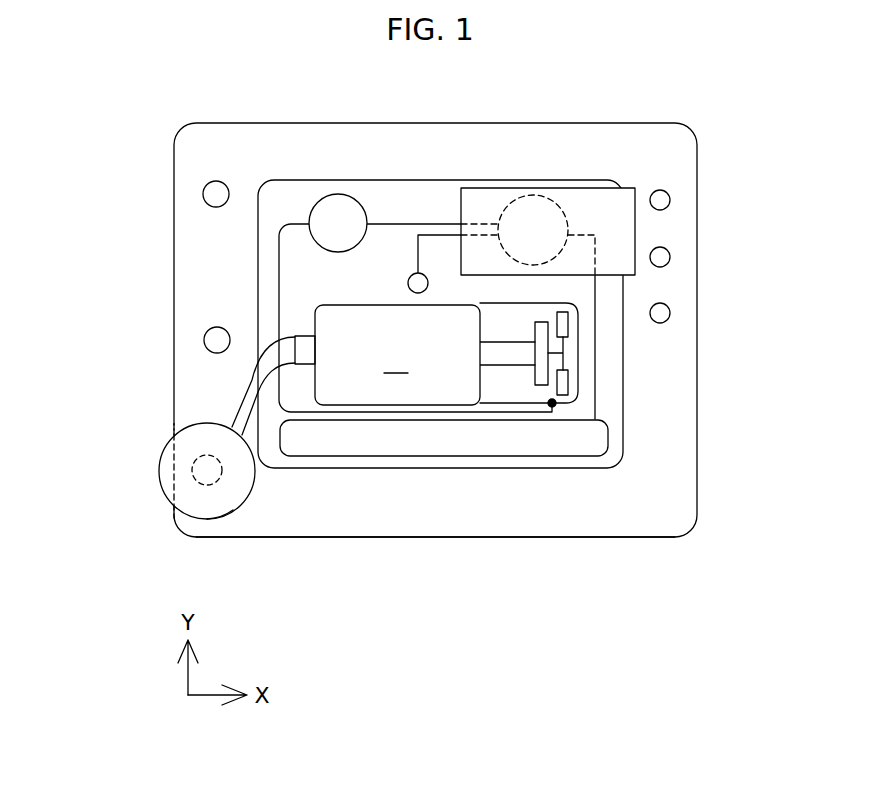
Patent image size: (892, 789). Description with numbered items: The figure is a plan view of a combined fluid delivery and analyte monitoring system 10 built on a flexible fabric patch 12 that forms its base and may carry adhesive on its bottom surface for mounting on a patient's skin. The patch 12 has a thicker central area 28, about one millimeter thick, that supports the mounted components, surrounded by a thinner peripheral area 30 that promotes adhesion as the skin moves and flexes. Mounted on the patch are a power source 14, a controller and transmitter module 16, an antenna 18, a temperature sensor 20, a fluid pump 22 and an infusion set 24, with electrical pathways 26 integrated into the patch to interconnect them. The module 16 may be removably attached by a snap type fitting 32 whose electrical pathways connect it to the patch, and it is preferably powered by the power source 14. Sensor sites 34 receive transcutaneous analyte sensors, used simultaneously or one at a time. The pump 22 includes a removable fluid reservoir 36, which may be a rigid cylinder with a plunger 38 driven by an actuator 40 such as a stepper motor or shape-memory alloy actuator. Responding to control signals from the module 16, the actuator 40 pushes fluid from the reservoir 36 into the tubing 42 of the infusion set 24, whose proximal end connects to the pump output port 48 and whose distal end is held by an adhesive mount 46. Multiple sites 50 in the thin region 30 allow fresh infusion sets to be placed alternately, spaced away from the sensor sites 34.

The combined fluid delivery and analyte monitoring system 10 is at (132, 115).
The flexible fabric patch 12 is at (668, 455).
The power source 14 is at (338, 210).
The controller and transmitter module 16 is at (597, 203).
The antenna 18 is at (580, 433).
The temperature sensor 20 is at (408, 283).
The fluid pump 22 is at (566, 352).
The infusion set 24 is at (233, 510).
The electrical pathways 26 is at (400, 220).
The thicker area 28 is at (545, 468).
The peripheral area 30 is at (465, 537).
The snap type fitting 32 is at (520, 213).
The sensor sites 34 is at (664, 312).
The fluid reservoir 36 is at (397, 355).
The plunger 38 is at (513, 355).
The actuator 40 is at (566, 385).
The tubing 42 is at (252, 380).
The adhesive mount 46 is at (165, 490).
The output port 48 is at (295, 336).
The sites 50 is at (204, 191).